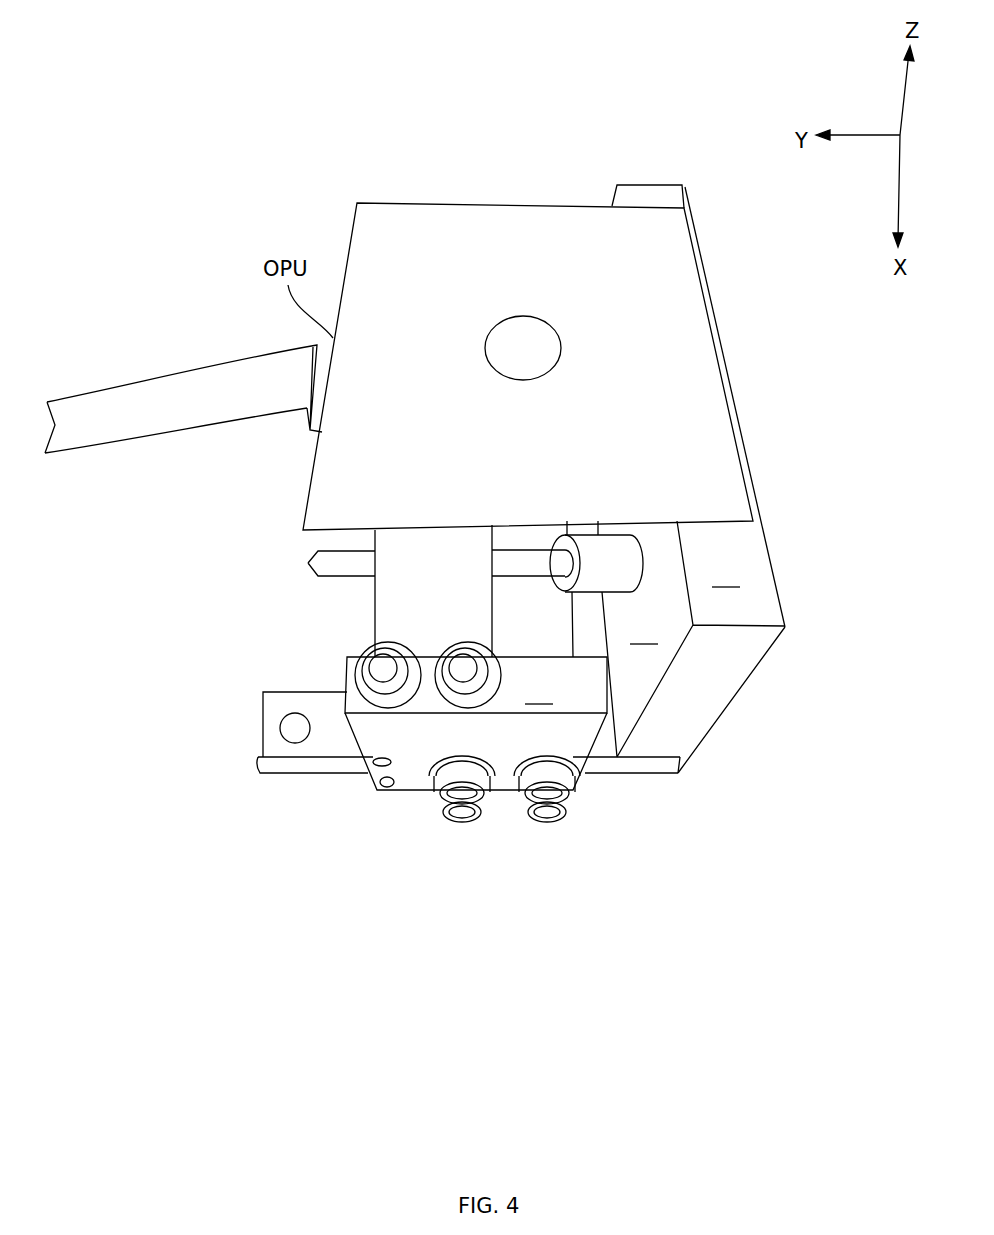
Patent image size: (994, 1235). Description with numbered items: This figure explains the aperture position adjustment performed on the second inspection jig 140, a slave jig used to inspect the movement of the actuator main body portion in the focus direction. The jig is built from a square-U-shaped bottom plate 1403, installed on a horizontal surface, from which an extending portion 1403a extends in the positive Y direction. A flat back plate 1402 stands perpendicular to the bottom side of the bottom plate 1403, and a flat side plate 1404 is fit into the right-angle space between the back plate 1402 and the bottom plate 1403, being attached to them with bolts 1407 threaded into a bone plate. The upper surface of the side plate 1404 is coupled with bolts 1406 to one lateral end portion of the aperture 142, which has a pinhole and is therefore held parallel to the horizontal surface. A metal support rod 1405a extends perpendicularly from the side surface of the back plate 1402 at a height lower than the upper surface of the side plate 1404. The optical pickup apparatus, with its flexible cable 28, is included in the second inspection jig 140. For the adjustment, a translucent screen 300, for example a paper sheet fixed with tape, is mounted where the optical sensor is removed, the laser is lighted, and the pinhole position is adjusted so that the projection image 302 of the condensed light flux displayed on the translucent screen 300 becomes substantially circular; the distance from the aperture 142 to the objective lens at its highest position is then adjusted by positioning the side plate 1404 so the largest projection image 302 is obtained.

The translucent screen 300 is at (419, 222).
The projection image 302 is at (545, 340).
The flexible cable 28 is at (183, 374).
The back plate 1402 is at (743, 450).
The second inspection jig 140 is at (722, 722).
The aperture 142 is at (377, 627).
The support rod 1405a is at (308, 563).
The bolts 1406 is at (438, 688).
The bottom plate 1403 is at (260, 765).
The extending portion 1403a is at (262, 725).
The side plate 1404 is at (413, 783).
The bolts 1407 is at (560, 805).